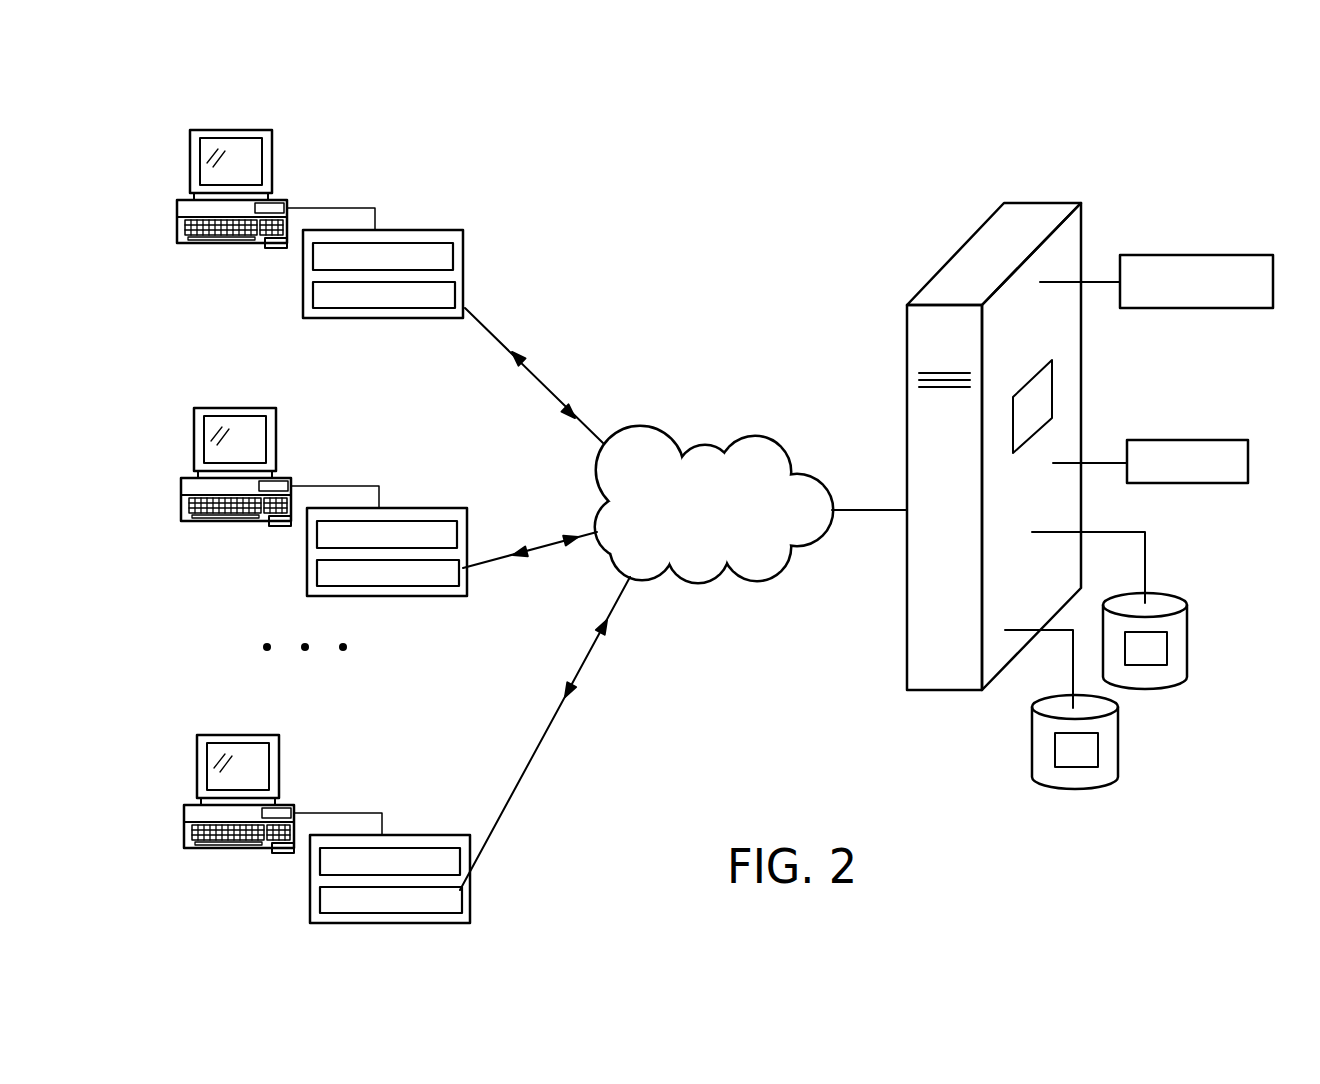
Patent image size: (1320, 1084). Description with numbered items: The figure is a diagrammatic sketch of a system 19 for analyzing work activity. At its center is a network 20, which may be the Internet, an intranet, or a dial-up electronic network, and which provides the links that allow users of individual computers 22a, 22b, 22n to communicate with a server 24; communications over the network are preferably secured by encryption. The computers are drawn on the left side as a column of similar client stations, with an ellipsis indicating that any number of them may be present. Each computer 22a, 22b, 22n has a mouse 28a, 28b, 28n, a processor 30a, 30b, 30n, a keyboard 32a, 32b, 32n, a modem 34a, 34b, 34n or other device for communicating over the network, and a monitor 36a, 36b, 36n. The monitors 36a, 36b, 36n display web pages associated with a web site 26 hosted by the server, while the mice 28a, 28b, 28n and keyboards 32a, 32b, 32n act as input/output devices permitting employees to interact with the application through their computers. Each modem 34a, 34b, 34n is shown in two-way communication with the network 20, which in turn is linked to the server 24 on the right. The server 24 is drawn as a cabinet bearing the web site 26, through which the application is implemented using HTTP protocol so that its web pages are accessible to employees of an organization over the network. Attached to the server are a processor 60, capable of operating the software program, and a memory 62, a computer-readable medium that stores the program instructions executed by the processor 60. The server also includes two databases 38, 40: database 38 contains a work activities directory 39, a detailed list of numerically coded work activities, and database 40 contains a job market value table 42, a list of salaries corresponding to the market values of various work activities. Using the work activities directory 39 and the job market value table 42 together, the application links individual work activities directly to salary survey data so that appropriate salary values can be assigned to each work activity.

The system 19 is at (781, 312).
The network 20 is at (707, 447).
The computer 22a is at (182, 130).
The computer 22b is at (224, 462).
The computer 22n is at (227, 789).
The server 24 is at (968, 251).
The web site 26 is at (1032, 395).
The mouse 28a is at (268, 250).
The mouse 28b is at (256, 541).
The mouse 28n is at (259, 868).
The processor 30a is at (458, 237).
The processor 30b is at (413, 547).
The processor 30n is at (398, 881).
The keyboard 32a is at (178, 215).
The keyboard 32b is at (218, 480).
The keyboard 32n is at (221, 807).
The modem 34a is at (456, 290).
The modem 34b is at (417, 581).
The modem 34n is at (403, 922).
The monitor 36a is at (250, 132).
The monitor 36b is at (248, 426).
The monitor 36n is at (251, 753).
The database 38 is at (1040, 757).
The work activities directory 39 is at (1063, 748).
The database 40 is at (1169, 603).
The job market value table 42 is at (1165, 647).
The processor 60 is at (1150, 256).
The memory 62 is at (1167, 443).